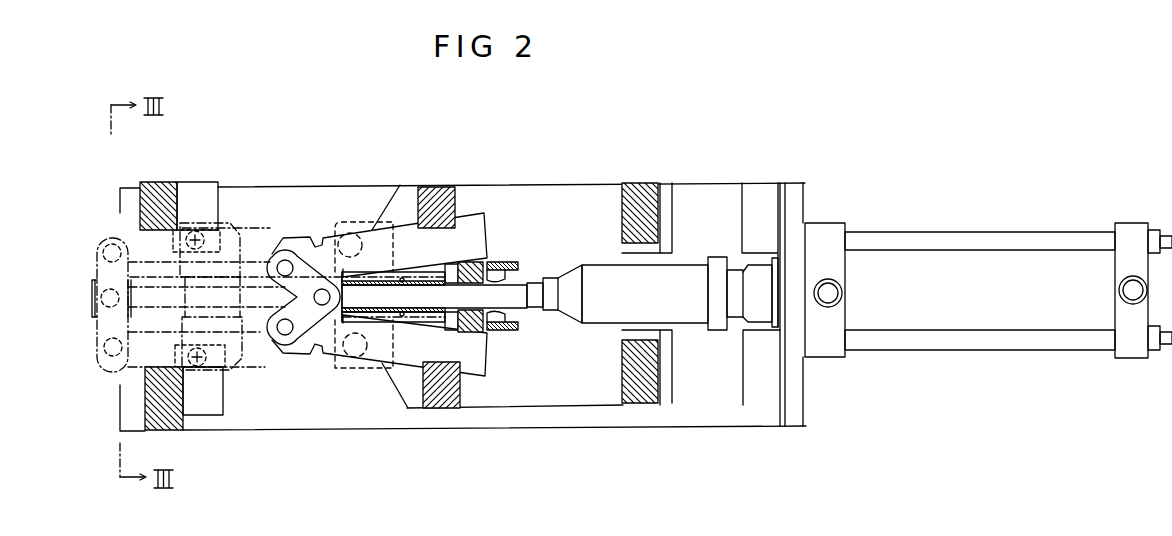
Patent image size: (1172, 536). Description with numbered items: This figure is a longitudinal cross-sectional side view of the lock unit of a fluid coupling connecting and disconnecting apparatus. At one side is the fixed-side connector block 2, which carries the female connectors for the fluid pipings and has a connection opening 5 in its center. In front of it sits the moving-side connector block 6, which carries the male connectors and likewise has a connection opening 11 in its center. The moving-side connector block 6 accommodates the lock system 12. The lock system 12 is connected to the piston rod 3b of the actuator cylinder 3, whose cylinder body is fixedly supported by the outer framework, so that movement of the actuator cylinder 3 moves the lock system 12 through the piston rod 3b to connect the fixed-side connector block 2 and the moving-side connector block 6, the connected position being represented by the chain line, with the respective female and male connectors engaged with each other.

The fixed-side connector block 2 is at (158, 197).
The actuator cylinder 3 is at (953, 229).
The piston rod 3b is at (535, 276).
The connection opening 5 is at (158, 238).
The moving-side connector block 6 is at (446, 188).
The connection opening 11 is at (436, 238).
The lock system 12 is at (343, 202).